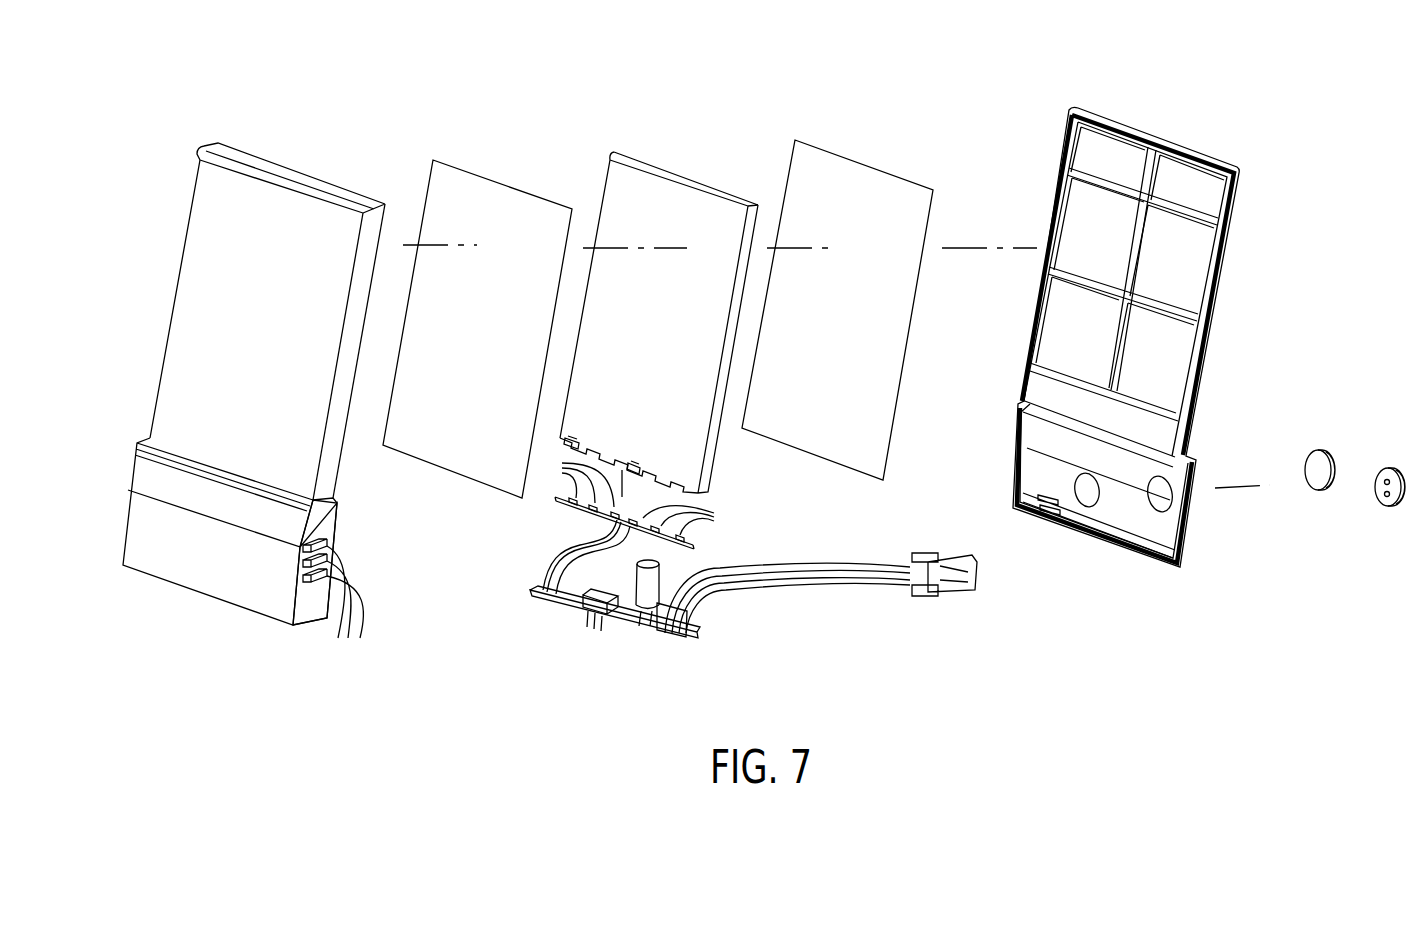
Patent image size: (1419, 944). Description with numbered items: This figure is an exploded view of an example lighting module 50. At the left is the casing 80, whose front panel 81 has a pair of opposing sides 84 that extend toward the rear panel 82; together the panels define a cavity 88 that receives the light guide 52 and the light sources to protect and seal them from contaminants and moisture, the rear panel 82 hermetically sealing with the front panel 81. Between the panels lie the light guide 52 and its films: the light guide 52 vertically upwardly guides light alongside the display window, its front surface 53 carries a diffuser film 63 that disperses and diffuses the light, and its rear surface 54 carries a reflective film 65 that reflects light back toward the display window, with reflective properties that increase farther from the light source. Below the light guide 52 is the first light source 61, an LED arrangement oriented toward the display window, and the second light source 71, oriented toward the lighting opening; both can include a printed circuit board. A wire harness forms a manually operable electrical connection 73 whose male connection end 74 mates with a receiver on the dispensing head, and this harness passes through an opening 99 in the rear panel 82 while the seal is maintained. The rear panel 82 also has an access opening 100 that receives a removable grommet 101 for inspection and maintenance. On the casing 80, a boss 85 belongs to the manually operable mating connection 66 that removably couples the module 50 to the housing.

The lighting module 50 is at (836, 66).
The light guide 52 is at (677, 315).
The front surface 53 is at (622, 208).
The rear surface 54 is at (720, 447).
The first light source 61 is at (638, 523).
The diffuser film 63 is at (459, 193).
The reflective film 65 is at (855, 183).
The mating connection 66 is at (393, 588).
The second light source 71 is at (761, 632).
The electrical connection 73 is at (733, 588).
The male connection end 74 is at (960, 582).
The casing 80 is at (279, 407).
The front panel 81 is at (250, 190).
The rear panel 82 is at (1153, 360).
The opposing sides 84 is at (328, 475).
The boss 85 is at (333, 604).
The cavity 88 is at (363, 327).
The opening 99 is at (1156, 500).
The access opening 100 is at (1086, 492).
The grommet 101 is at (1382, 490).